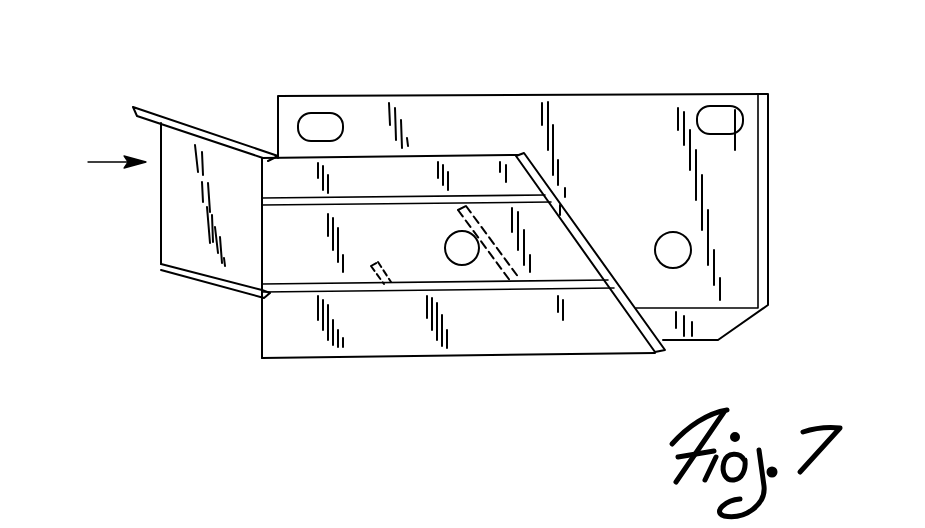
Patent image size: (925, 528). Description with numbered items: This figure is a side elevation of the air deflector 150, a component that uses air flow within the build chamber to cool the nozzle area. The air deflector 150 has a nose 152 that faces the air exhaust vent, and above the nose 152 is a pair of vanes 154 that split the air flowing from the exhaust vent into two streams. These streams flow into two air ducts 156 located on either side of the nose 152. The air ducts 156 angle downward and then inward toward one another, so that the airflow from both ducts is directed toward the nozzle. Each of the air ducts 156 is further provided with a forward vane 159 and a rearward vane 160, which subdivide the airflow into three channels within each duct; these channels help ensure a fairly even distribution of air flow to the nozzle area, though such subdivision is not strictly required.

The air deflector 150 is at (685, 65).
The nose 152 is at (161, 202).
The vanes 154 is at (140, 108).
The air ducts 156 is at (350, 173).
The forward vane 159 is at (362, 292).
The rearward vane 160 is at (483, 292).